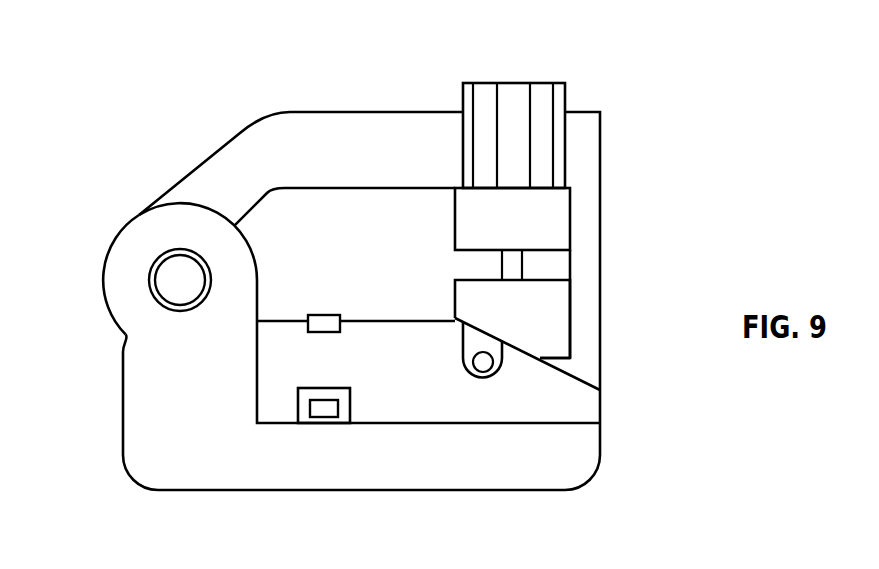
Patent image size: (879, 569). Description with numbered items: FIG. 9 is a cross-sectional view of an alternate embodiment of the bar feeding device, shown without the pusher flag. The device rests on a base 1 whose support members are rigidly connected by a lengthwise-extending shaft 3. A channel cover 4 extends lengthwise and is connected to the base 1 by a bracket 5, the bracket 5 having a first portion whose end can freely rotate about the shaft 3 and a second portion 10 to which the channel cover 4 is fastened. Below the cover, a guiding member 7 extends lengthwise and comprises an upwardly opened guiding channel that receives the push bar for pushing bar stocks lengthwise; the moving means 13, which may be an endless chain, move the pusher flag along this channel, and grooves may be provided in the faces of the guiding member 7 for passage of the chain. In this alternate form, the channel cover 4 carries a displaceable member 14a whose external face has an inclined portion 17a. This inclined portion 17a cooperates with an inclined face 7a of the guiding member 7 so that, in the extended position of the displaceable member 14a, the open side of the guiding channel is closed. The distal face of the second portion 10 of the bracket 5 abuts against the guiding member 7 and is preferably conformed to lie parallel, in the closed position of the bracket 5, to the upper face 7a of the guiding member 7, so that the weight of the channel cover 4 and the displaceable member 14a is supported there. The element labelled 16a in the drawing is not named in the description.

The base 1 is at (118, 482).
The shaft 3 is at (170, 272).
The channel cover 4 is at (545, 213).
The bracket 5 is at (272, 98).
The guiding member 7 is at (577, 403).
The inclined face of guiding member 7a is at (557, 368).
The second portion of bracket 10 is at (587, 135).
The moving means 13 is at (322, 332).
The displaceable member 14a is at (558, 308).
The lever 16a is at (590, 380).
The inclined portion of external face 17a is at (519, 352).